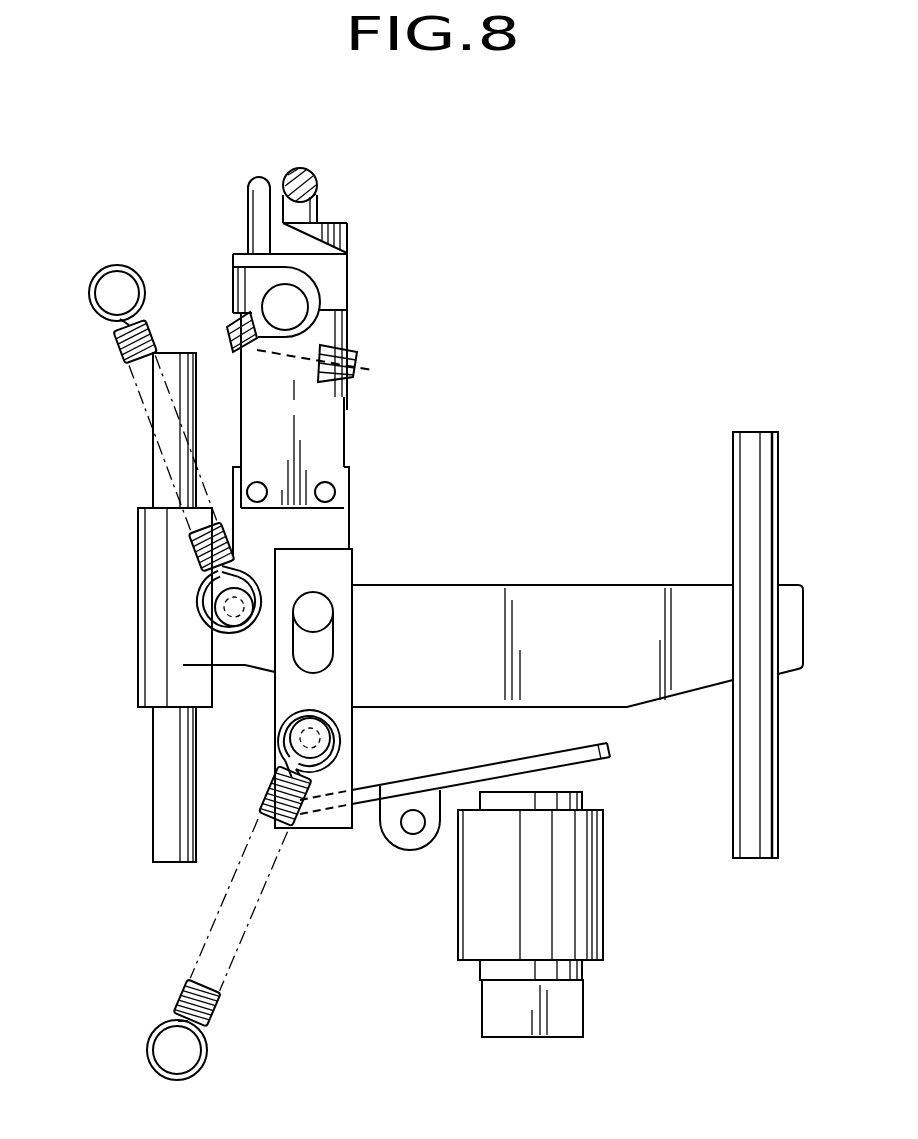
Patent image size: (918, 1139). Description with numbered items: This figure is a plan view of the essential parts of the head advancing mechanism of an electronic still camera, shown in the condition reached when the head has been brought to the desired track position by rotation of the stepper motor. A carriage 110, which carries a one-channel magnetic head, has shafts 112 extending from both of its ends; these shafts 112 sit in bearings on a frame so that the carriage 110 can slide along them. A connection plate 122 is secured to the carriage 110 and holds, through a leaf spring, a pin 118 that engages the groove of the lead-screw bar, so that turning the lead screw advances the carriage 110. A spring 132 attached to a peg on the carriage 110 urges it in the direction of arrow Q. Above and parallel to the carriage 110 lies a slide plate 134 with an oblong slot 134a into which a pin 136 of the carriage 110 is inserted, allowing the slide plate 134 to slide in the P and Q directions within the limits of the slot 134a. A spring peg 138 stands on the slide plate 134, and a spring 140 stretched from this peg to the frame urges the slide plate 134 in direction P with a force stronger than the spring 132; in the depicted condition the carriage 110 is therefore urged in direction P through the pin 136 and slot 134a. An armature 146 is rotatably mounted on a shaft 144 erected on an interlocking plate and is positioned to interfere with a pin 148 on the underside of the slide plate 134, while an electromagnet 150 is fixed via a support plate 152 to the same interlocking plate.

The carriage 110 is at (585, 605).
The shafts 112 is at (177, 352).
The pin 118 is at (348, 362).
The connection plate 122 is at (330, 435).
The spring 132 is at (114, 357).
The slide plate 134 is at (342, 720).
The slot 134a is at (323, 640).
The pin 136 is at (318, 600).
The spring peg 138 is at (297, 742).
The spring 140 is at (172, 990).
The shaft 144 is at (415, 835).
The armature 146 is at (383, 818).
The pin 148 is at (318, 790).
The electromagnet 150 is at (568, 880).
The support plate 152 is at (565, 1010).